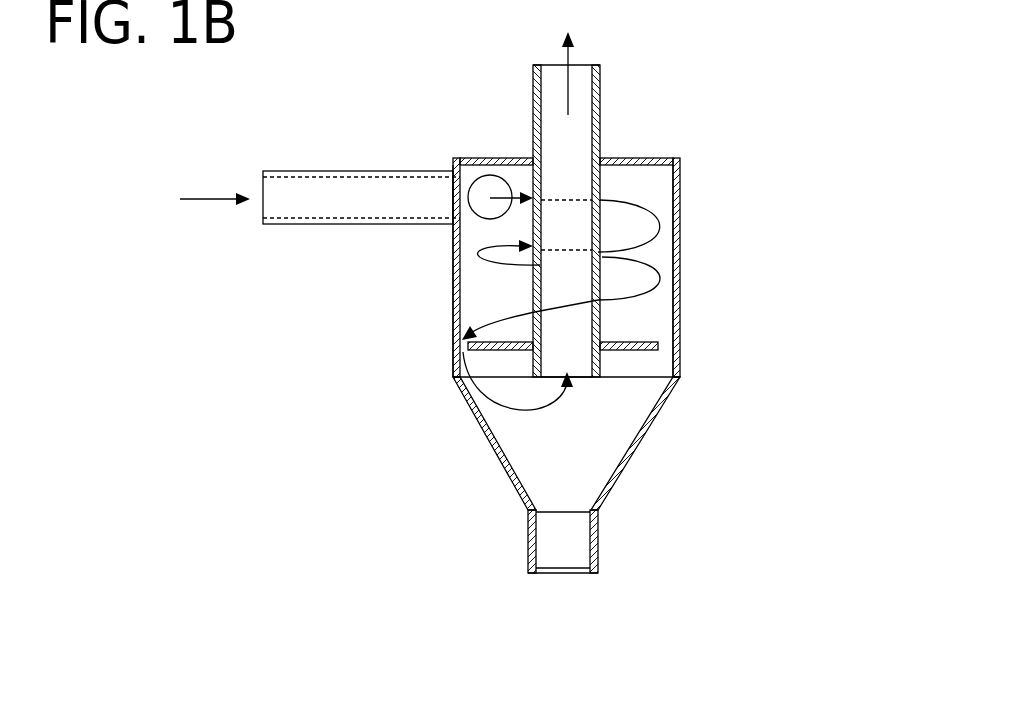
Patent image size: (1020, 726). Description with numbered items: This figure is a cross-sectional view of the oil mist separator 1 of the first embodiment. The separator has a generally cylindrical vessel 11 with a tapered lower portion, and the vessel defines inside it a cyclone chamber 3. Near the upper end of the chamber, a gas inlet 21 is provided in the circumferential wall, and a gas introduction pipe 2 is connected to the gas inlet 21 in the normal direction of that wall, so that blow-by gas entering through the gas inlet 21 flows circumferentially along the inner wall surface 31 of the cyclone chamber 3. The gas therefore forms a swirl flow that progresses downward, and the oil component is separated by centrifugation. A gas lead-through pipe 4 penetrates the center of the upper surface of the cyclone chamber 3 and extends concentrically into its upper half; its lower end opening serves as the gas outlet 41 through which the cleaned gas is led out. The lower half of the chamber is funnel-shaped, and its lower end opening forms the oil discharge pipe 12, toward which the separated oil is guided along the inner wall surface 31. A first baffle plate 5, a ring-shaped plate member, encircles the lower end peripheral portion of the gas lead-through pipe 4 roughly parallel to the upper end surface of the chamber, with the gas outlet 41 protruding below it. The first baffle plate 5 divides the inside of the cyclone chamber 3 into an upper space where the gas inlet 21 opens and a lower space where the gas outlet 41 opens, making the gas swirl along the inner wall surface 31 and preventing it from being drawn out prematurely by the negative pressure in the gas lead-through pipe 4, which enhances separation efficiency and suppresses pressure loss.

The oil mist separator 1 is at (468, 107).
The gas introduction pipe 2 is at (403, 225).
The gas inlet 21 is at (475, 186).
The cyclone chamber 3 is at (650, 182).
The inner wall surface 31 is at (677, 263).
The gas lead-through pipe 4 is at (600, 212).
The gas outlet 41 is at (578, 378).
The first baffle plate 5 is at (630, 352).
The vessel 11 is at (453, 330).
The oil discharge pipe 12 is at (527, 543).